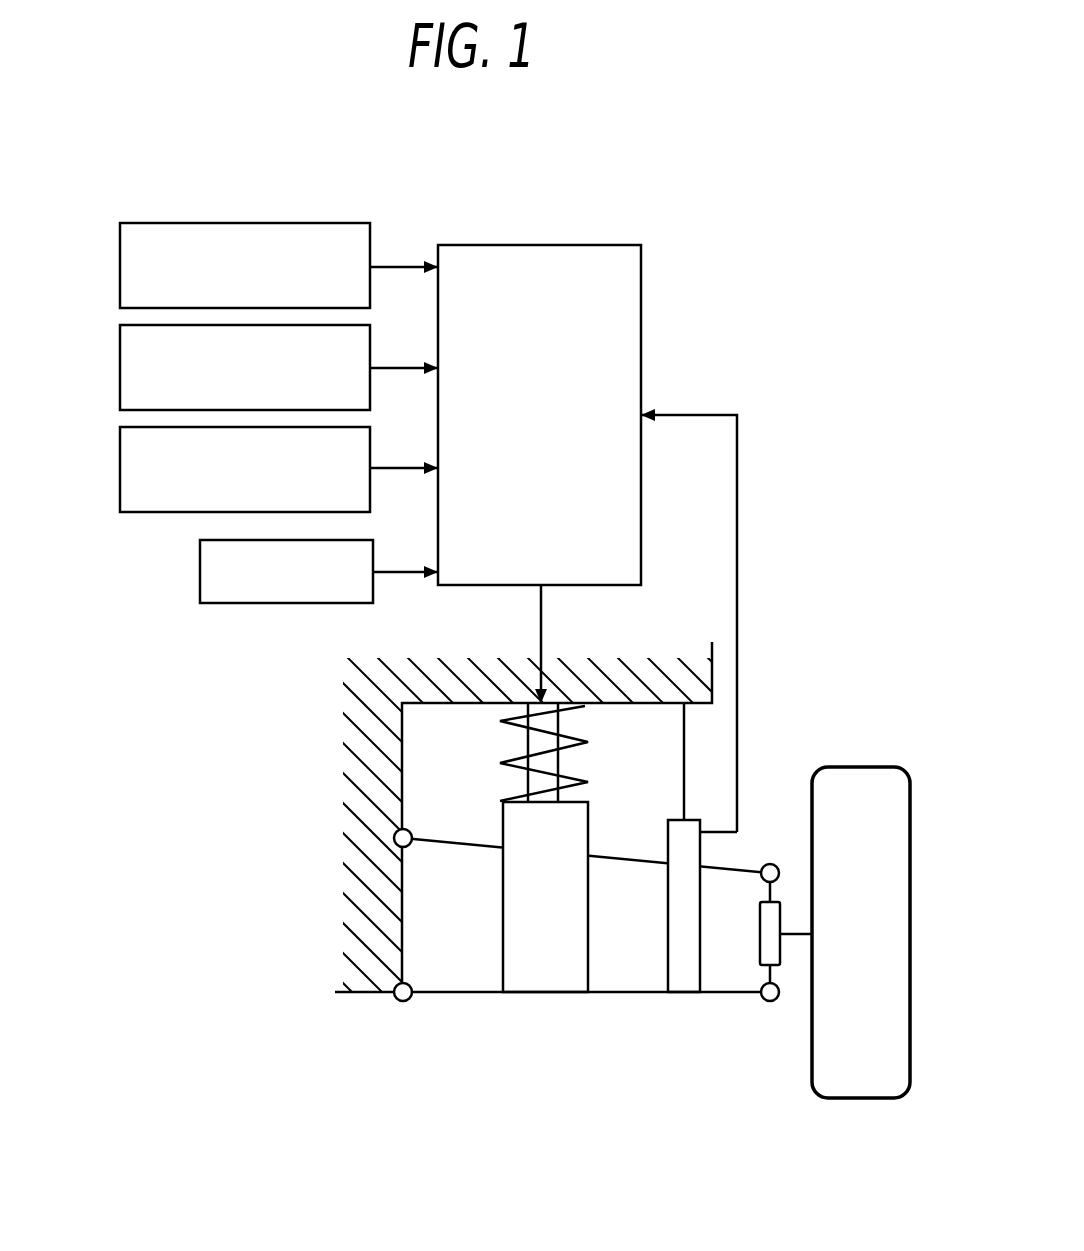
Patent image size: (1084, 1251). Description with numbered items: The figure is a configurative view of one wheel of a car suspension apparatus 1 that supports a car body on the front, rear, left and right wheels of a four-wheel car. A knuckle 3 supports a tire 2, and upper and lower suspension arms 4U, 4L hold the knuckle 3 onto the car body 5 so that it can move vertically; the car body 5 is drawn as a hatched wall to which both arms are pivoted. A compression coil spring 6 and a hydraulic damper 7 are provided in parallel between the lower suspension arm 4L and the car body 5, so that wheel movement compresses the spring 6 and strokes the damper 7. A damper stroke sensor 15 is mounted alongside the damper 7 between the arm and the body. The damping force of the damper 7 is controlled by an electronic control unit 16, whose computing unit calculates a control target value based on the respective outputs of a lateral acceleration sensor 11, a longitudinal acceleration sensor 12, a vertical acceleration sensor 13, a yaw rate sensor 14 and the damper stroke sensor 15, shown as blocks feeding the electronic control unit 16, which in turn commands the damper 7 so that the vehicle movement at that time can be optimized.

The suspension apparatus 1 is at (788, 680).
The tire 2 is at (872, 1085).
The knuckle 3 is at (775, 950).
The upper suspension arm 4U is at (738, 868).
The lower suspension arm 4L is at (717, 995).
The car body 5 is at (370, 975).
The compression coil spring 6 is at (566, 742).
The hydraulic damper 7 is at (577, 912).
The lateral acceleration sensor 11 is at (120, 263).
The longitudinal acceleration sensor 12 is at (120, 365).
The vertical acceleration sensor 13 is at (120, 465).
The yaw rate sensor 14 is at (200, 570).
The damper stroke sensor 15 is at (690, 933).
The electronic control unit (ECU) 16 is at (600, 245).